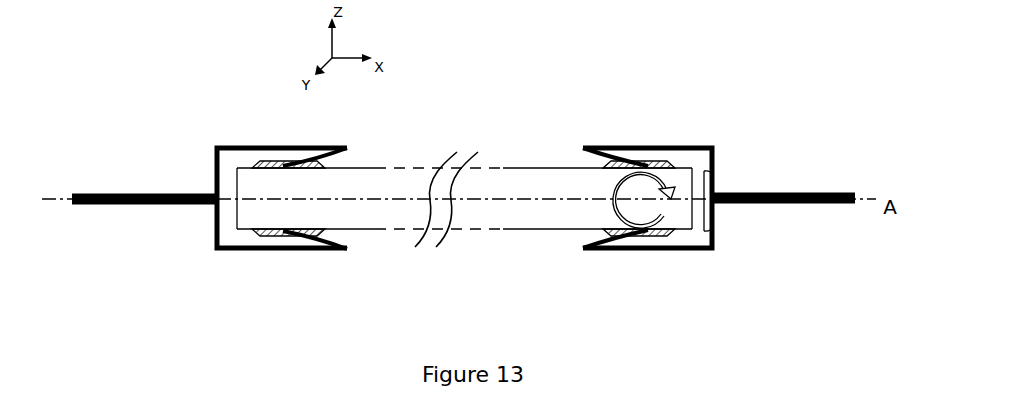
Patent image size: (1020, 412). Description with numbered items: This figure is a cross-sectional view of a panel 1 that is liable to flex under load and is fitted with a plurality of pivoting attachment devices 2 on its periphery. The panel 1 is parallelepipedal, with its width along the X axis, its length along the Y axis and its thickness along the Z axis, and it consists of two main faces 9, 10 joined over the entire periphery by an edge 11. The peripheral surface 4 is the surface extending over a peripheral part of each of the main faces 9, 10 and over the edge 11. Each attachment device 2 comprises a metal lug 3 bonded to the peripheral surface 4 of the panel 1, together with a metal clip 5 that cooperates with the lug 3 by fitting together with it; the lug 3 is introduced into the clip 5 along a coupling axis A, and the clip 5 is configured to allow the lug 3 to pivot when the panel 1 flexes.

The panel 1 is at (553, 180).
The pivoting attachment device 2 is at (204, 238).
The metal lug 3 is at (667, 150).
The peripheral surface 4 is at (691, 236).
The metal clip 5 is at (662, 250).
The main face 9 is at (519, 167).
The main face 10 is at (513, 232).
The edge 11 is at (694, 181).